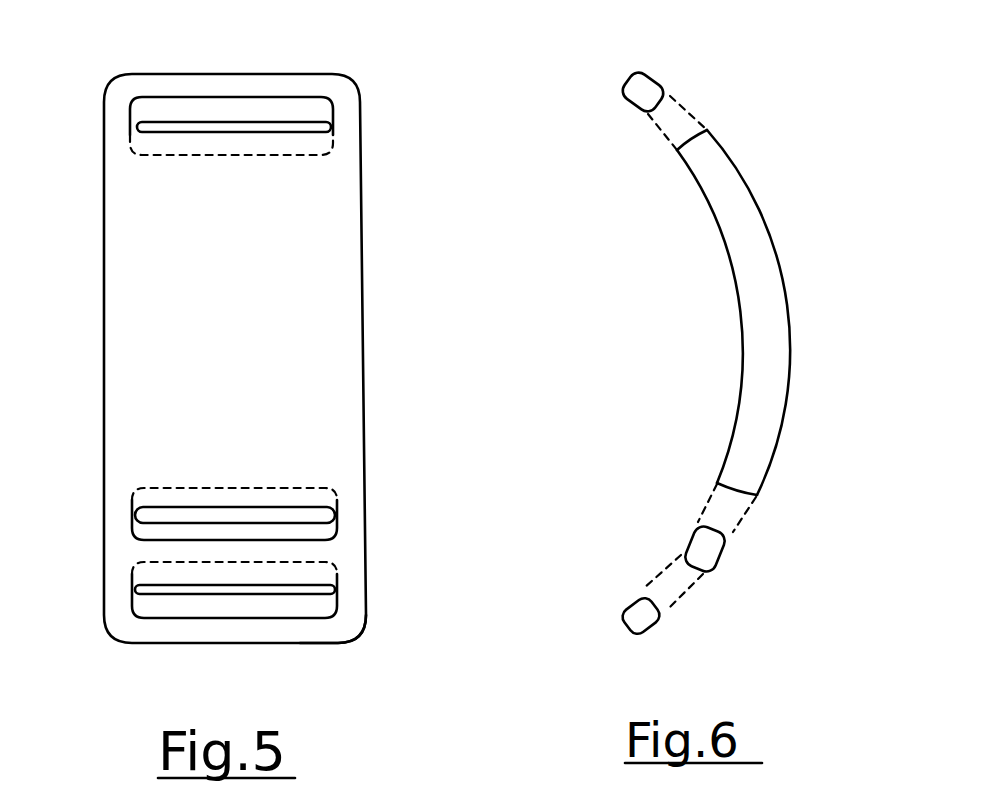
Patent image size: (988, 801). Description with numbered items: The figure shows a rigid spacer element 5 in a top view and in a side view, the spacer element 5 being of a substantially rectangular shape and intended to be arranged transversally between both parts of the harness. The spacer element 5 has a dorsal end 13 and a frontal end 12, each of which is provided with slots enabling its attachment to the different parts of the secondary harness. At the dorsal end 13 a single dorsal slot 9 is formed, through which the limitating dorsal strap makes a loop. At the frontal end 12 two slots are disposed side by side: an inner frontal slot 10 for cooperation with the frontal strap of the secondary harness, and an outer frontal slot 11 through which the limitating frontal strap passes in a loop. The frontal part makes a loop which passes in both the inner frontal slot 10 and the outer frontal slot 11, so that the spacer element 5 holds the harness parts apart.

In FIG. 5, the spacer element 5 is at (150, 261).
In FIG. 6, the spacer element 5 is at (753, 257).
In FIG. 5, the dorsal slot 9 is at (335, 119).
In FIG. 6, the dorsal slot 9 is at (640, 116).
In FIG. 5, the inner frontal slot 10 is at (337, 521).
In FIG. 6, the inner frontal slot 10 is at (723, 504).
In FIG. 5, the outer frontal slot 11 is at (337, 599).
In FIG. 6, the outer frontal slot 11 is at (663, 582).
In FIG. 5, the frontal end 12 is at (337, 631).
In FIG. 6, the frontal end 12 is at (638, 624).
In FIG. 5, the dorsal end 13 is at (335, 94).
In FIG. 6, the dorsal end 13 is at (645, 92).